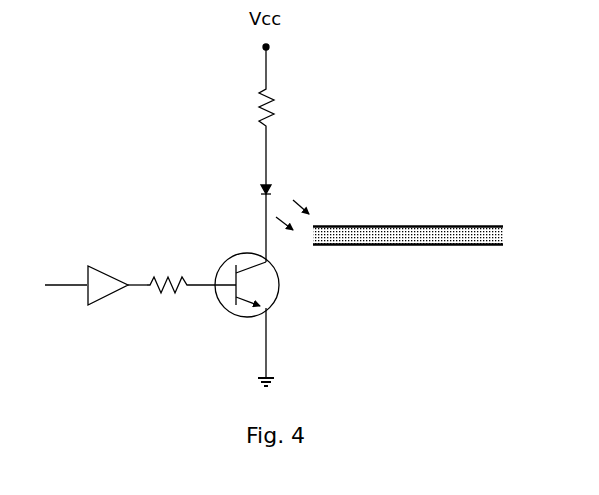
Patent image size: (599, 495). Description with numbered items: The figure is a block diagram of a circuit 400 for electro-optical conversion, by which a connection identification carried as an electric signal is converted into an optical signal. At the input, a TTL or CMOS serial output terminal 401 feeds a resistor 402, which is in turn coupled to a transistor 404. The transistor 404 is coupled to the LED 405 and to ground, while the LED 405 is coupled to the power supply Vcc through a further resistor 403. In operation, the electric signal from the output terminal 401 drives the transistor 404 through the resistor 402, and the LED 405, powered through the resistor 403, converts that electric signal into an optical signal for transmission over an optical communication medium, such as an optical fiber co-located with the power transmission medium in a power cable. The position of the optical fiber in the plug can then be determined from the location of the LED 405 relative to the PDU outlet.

The circuit for electro-optical conversion 400 is at (102, 82).
The RS-232 serial output terminal 401 is at (99, 266).
The resistor 402 is at (163, 273).
The resistor 403 is at (276, 111).
The transistor 404 is at (278, 292).
The LED 405 is at (262, 186).